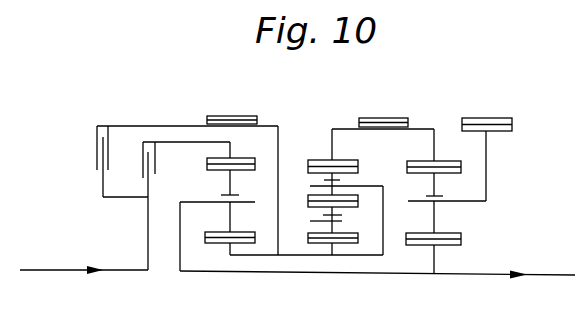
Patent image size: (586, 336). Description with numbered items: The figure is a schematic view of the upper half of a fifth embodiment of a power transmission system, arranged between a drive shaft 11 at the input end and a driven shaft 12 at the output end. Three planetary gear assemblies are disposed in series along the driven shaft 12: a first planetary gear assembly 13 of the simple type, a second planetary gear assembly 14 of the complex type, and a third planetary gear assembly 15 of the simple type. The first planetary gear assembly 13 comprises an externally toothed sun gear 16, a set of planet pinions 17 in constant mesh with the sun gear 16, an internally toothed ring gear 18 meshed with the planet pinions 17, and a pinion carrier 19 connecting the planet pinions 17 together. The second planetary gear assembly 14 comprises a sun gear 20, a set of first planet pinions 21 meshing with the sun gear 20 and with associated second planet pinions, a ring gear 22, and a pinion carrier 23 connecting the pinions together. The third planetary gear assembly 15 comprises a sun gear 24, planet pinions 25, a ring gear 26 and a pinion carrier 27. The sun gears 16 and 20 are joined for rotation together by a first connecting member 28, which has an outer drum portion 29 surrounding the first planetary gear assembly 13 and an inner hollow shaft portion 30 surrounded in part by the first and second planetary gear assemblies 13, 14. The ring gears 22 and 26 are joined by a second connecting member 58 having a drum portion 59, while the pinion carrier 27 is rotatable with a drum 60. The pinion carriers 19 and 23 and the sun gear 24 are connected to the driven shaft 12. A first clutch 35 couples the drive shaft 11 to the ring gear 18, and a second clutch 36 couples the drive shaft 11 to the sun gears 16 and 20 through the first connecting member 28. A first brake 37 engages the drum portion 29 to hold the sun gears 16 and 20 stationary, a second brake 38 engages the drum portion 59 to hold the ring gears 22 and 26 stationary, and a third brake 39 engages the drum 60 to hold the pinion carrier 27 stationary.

The drive shaft 11 is at (58, 275).
The driven shaft 12 is at (506, 277).
The first planetary gear assembly 13 is at (224, 252).
The second planetary gear assembly 14 is at (341, 256).
The third planetary gear assembly 15 is at (450, 256).
The sun gear 16 is at (205, 246).
The planet pinions 17 is at (206, 171).
The ring gear 18 is at (206, 164).
The pinion carrier 19 is at (176, 256).
The sun gear 20 is at (353, 248).
The first planet pinions 21 is at (308, 176).
The ring gear 22 is at (312, 158).
The pinion carrier 23 is at (384, 212).
The sun gear 24 is at (462, 240).
The planet pinions 25 is at (448, 175).
The ring gear 26 is at (437, 160).
The pinion carrier 27 is at (488, 200).
The first connecting member 28 is at (279, 209).
The outer drum portion 29 is at (172, 125).
The inner hollow shaft portion 30 is at (298, 257).
The first clutch 35 is at (142, 178).
The second clutch 36 is at (97, 170).
The first brake 37 is at (241, 115).
The second brake 38 is at (395, 117).
The third brake 39 is at (490, 117).
The second connecting member 58 is at (334, 147).
The drum portion 59 is at (432, 128).
The drum 60 is at (493, 132).